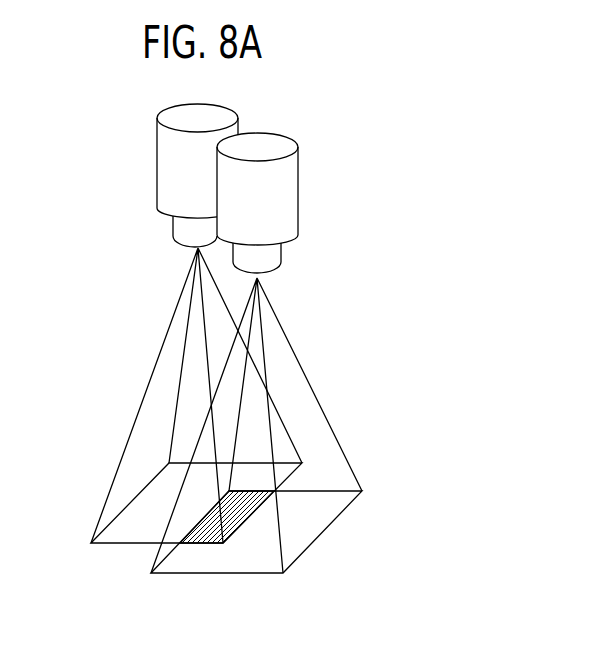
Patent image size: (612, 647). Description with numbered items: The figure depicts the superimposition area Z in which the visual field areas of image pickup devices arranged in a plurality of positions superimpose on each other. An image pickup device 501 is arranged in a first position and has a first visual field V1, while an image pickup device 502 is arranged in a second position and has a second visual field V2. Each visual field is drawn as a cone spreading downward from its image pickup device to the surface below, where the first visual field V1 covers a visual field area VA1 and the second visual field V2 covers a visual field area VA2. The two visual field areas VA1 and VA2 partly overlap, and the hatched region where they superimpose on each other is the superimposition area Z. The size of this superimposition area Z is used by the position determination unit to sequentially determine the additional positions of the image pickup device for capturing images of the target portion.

The image pickup device 502 is at (158, 167).
The image pickup device 501 is at (300, 203).
The second visual field V2 is at (162, 367).
The first visual field V1 is at (313, 415).
The visual field area VA2 is at (138, 525).
The visual field area VA1 is at (323, 520).
The superimposition area Z is at (217, 545).